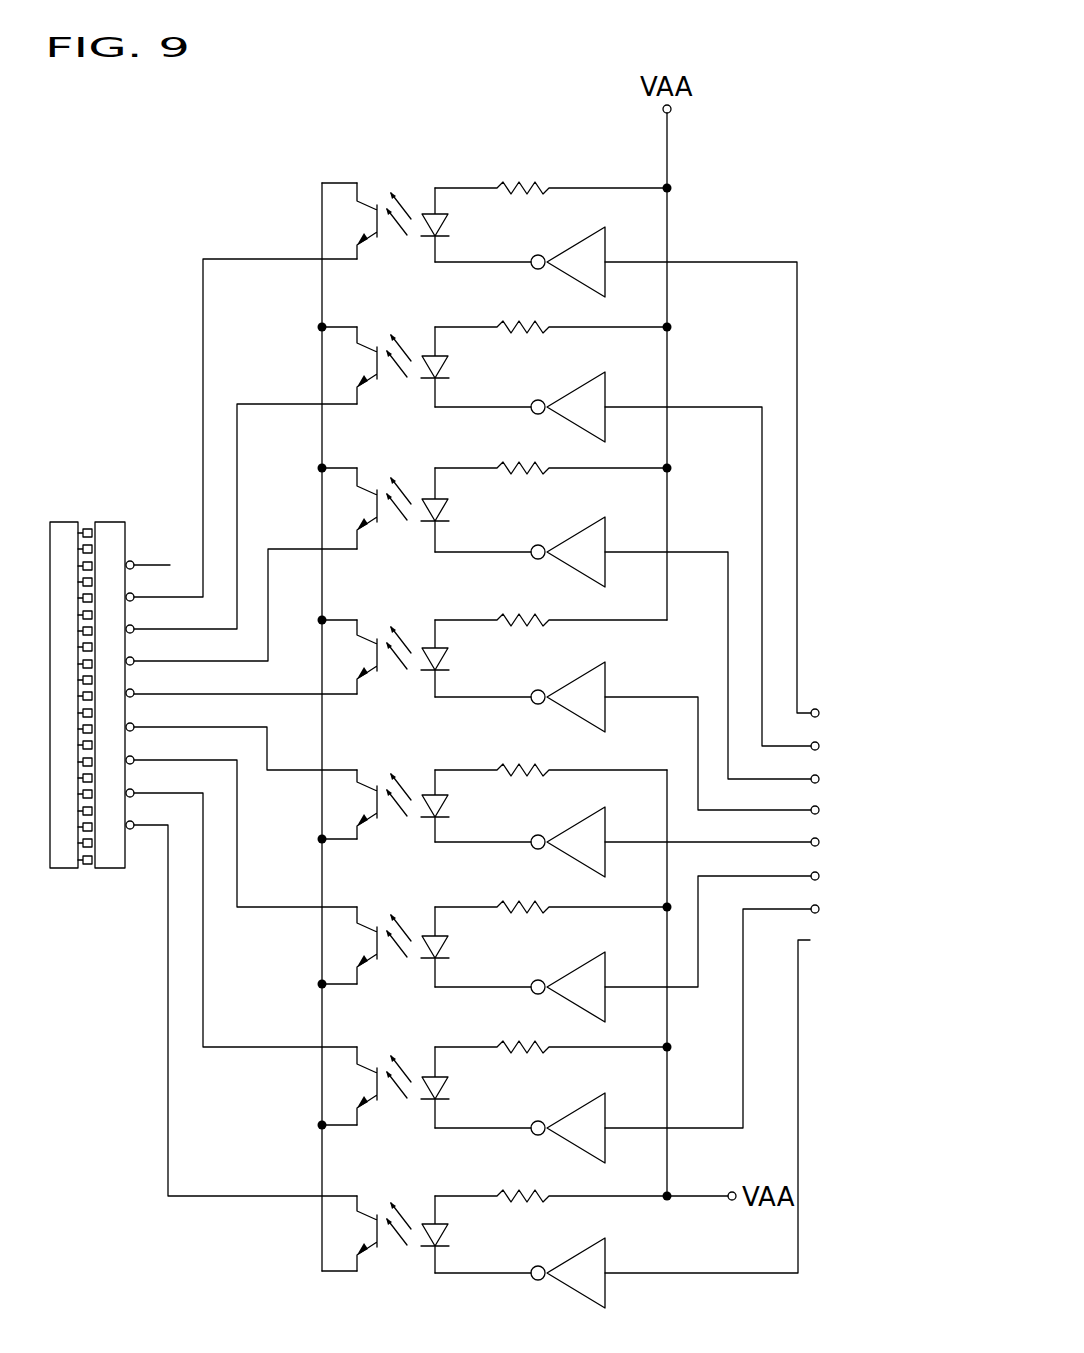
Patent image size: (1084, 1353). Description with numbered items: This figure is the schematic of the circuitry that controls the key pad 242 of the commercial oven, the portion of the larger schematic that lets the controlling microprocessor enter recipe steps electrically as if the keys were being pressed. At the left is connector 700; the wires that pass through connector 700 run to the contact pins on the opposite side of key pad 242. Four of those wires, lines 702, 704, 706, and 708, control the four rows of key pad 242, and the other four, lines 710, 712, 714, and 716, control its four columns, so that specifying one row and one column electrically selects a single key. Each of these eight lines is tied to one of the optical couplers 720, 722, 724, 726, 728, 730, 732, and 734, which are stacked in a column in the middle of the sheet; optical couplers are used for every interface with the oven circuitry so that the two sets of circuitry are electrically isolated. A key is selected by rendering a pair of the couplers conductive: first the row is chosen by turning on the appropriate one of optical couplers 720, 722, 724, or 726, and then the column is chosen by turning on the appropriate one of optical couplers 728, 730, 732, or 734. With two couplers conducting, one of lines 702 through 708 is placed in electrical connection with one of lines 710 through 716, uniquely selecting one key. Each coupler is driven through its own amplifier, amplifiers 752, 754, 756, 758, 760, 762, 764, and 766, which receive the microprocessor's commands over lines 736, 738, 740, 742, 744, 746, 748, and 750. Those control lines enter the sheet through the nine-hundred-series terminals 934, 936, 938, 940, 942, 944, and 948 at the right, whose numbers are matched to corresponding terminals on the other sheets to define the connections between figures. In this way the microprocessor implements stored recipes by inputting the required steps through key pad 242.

The connector 700 is at (108, 521).
The key pad 242 is at (65, 870).
The line 702 is at (203, 386).
The line 704 is at (237, 500).
The line 706 is at (268, 622).
The line 708 is at (274, 693).
The line 710 is at (268, 753).
The line 712 is at (238, 888).
The line 714 is at (205, 992).
The line 716 is at (168, 1120).
The optical coupler 720 is at (418, 188).
The optical coupler 722 is at (418, 327).
The optical coupler 724 is at (418, 468).
The optical coupler 726 is at (418, 620).
The optical coupler 728 is at (418, 770).
The optical coupler 730 is at (418, 907).
The optical coupler 732 is at (418, 1047).
The optical coupler 734 is at (418, 1196).
The amplifier 752 is at (577, 241).
The amplifier 754 is at (577, 386).
The amplifier 756 is at (577, 531).
The amplifier 758 is at (577, 676).
The amplifier 760 is at (577, 821).
The amplifier 762 is at (577, 966).
The amplifier 764 is at (577, 1107).
The amplifier 766 is at (577, 1252).
The line 736 is at (722, 262).
The line 738 is at (702, 407).
The line 740 is at (685, 552).
The line 742 is at (635, 697).
The line 744 is at (690, 843).
The line 746 is at (698, 912).
The line 748 is at (697, 1128).
The line 750 is at (672, 1273).
The terminal 934 is at (842, 714).
The terminal 936 is at (842, 747).
The terminal 938 is at (842, 780).
The terminal 940 is at (842, 811).
The terminal 942 is at (842, 843).
The terminal 944 is at (842, 877).
The terminal 948 is at (842, 910).